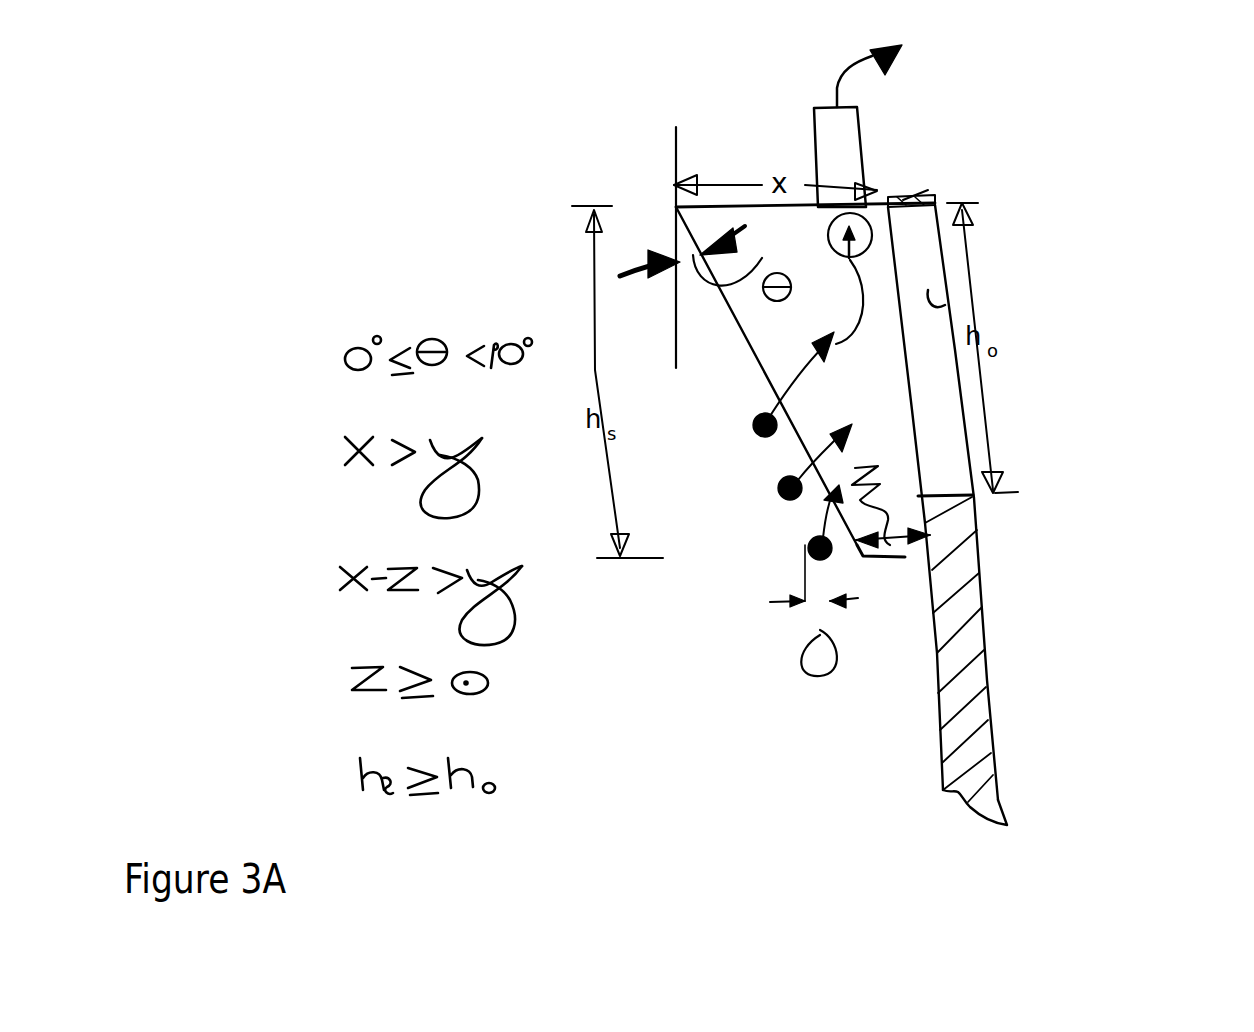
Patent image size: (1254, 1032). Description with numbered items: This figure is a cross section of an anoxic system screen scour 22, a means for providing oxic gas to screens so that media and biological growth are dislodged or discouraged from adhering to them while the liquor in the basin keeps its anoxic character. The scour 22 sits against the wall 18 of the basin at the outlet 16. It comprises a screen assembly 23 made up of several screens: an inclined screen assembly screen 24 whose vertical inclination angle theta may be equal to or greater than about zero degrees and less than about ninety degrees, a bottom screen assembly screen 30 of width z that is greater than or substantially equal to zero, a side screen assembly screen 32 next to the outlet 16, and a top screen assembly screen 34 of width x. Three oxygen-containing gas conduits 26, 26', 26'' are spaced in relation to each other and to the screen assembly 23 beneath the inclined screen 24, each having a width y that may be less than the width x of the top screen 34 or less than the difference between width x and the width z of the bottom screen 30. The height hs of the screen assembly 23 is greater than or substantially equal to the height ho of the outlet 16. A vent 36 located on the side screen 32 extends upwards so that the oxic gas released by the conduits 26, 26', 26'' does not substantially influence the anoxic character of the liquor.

The outlet 16 is at (945, 302).
The wall 18 is at (973, 697).
The anoxic system screen scour 22 is at (572, 136).
The screen assembly 23 is at (520, 248).
The screen assembly screen 24 is at (777, 402).
The oxygen-containing gas conduit 26 is at (691, 484).
The oxygen-containing gas conduit 26' is at (732, 566).
The oxygen-containing gas conduit 26'' is at (827, 633).
The screen assembly screen 30 is at (905, 556).
The screen assembly screen 32 is at (893, 208).
The screen assembly screen 34 is at (727, 205).
The vent 36 is at (856, 128).